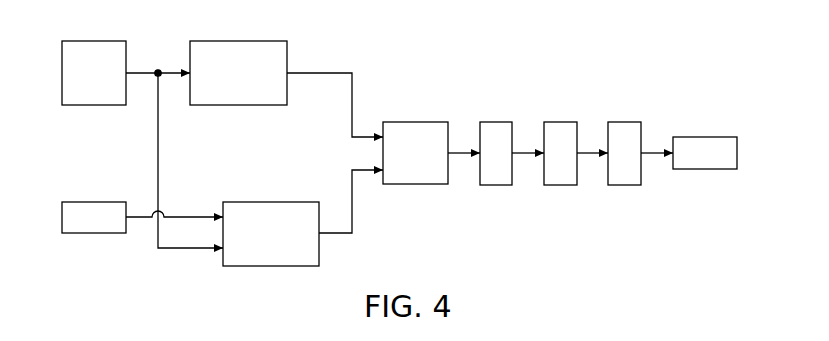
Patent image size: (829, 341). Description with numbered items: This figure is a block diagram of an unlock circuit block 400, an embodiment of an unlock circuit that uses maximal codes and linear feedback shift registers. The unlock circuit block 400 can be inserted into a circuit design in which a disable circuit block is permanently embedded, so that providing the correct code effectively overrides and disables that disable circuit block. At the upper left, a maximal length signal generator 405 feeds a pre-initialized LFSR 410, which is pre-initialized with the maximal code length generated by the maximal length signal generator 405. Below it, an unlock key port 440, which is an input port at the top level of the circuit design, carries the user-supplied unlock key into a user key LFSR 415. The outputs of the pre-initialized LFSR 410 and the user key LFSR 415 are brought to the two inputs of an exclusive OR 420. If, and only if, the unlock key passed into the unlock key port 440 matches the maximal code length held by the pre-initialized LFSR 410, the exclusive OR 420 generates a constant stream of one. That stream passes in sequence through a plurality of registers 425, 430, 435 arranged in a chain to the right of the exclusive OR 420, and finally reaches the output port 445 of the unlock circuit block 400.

The unlock circuit block 400 is at (423, 33).
The maximal length signal generator 405 is at (100, 105).
The pre-initialized LFSR 410 is at (258, 105).
The user key LFSR 415 is at (262, 266).
The exclusive OR 420 is at (427, 184).
The register 425 is at (500, 185).
The register 430 is at (565, 185).
The register 435 is at (628, 185).
The unlock key port 440 is at (100, 233).
The output port 445 is at (710, 169).